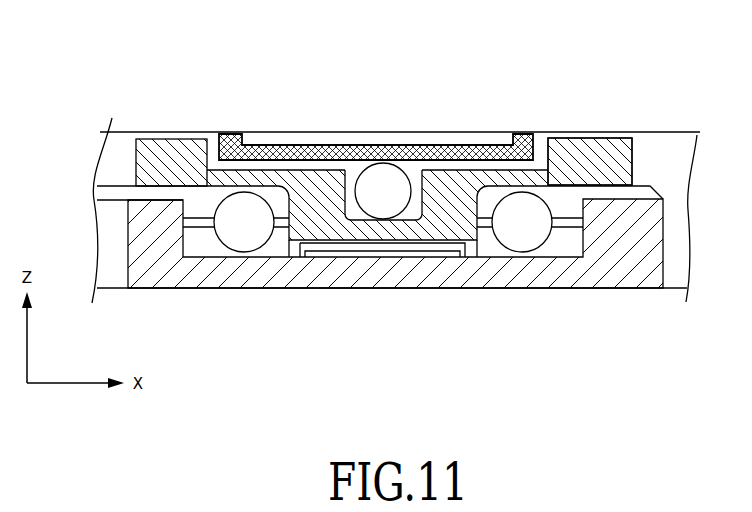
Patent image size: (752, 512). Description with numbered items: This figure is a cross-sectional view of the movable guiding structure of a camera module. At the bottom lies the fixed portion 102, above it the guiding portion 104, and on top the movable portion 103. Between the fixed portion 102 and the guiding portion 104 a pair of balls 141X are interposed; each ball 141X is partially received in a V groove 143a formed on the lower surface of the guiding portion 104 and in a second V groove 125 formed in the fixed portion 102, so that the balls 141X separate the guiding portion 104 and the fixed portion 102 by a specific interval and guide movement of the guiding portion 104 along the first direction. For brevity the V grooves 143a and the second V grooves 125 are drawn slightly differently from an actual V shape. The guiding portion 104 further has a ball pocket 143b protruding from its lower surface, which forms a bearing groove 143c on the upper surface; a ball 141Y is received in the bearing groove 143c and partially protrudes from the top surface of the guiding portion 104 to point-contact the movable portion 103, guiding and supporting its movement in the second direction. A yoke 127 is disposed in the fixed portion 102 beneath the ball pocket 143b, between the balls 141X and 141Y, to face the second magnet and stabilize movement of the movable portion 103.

The fixed portion 102 is at (463, 283).
The movable portion 103 is at (228, 133).
The guiding portion 104 is at (612, 160).
The second V groove 125 is at (203, 257).
The yoke 127 is at (348, 257).
The ball 141X is at (247, 236).
The ball 141Y is at (387, 180).
The V groove 143a is at (197, 187).
The ball pocket 143b is at (415, 233).
The bearing groove 143c is at (350, 180).